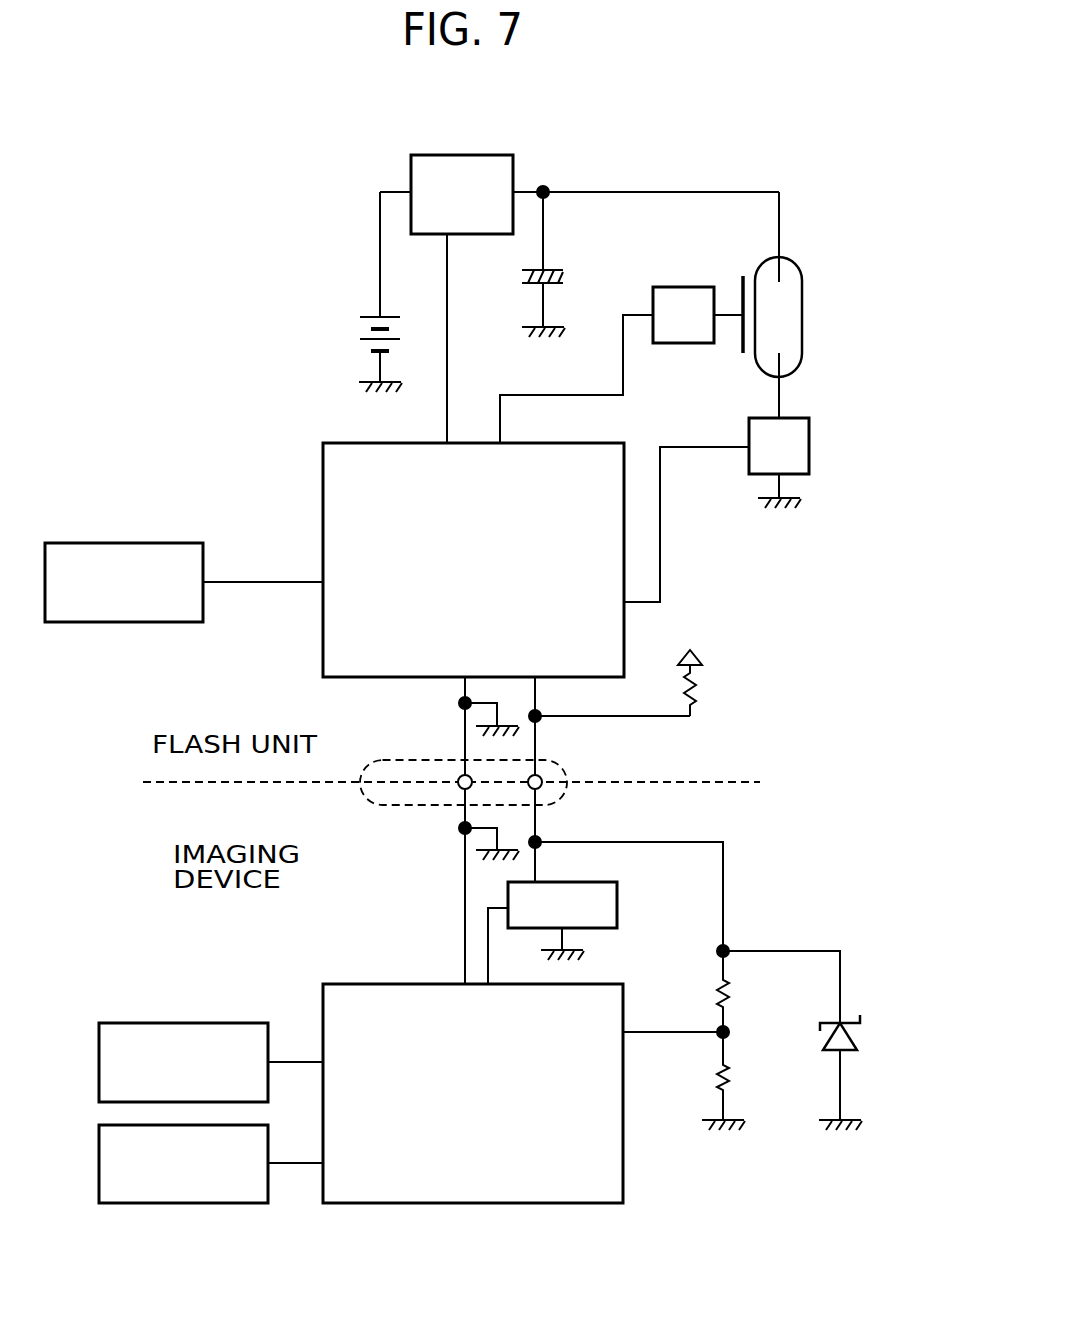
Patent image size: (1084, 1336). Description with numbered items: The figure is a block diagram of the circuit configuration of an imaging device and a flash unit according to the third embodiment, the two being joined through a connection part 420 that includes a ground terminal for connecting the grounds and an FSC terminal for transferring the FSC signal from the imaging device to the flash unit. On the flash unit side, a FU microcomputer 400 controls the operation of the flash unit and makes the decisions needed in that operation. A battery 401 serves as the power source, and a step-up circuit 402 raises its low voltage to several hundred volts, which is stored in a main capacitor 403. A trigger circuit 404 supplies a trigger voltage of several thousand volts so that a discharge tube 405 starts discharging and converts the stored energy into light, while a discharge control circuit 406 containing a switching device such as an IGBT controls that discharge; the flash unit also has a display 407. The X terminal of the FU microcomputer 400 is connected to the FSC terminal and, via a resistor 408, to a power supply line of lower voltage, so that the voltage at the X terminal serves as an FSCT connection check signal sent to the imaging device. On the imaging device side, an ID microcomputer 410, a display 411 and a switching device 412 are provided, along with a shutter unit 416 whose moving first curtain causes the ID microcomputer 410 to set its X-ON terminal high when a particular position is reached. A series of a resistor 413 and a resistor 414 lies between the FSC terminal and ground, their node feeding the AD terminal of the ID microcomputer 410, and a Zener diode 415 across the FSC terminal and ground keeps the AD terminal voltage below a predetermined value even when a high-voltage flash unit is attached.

The FU microcomputer 400 is at (323, 510).
The battery 401 is at (355, 334).
The step-up circuit 402 is at (466, 155).
The main capacitor 403 is at (549, 267).
The trigger circuit 404 is at (686, 287).
The discharge tube 405 is at (803, 316).
The discharge control circuit 406 is at (811, 446).
The display 407 is at (117, 543).
The resistor 408 is at (700, 692).
The ID microcomputer 410 is at (623, 1162).
The display 411 is at (183, 1022).
The switching device 412 is at (618, 905).
The resistor 413 is at (730, 1080).
The resistor 414 is at (730, 995).
The Zener diode 415 is at (860, 1042).
The shutter unit 416 is at (183, 1203).
The connection part 420 is at (566, 798).